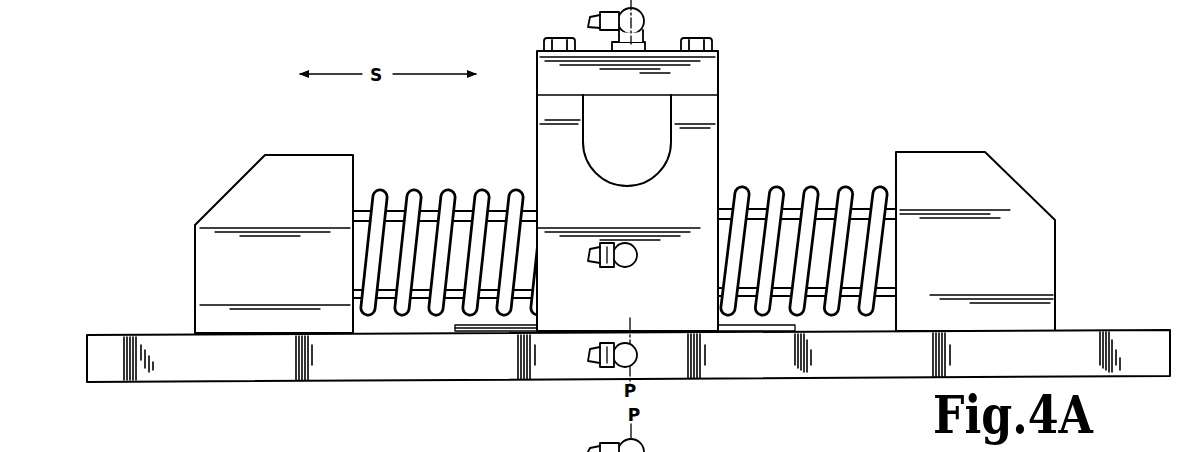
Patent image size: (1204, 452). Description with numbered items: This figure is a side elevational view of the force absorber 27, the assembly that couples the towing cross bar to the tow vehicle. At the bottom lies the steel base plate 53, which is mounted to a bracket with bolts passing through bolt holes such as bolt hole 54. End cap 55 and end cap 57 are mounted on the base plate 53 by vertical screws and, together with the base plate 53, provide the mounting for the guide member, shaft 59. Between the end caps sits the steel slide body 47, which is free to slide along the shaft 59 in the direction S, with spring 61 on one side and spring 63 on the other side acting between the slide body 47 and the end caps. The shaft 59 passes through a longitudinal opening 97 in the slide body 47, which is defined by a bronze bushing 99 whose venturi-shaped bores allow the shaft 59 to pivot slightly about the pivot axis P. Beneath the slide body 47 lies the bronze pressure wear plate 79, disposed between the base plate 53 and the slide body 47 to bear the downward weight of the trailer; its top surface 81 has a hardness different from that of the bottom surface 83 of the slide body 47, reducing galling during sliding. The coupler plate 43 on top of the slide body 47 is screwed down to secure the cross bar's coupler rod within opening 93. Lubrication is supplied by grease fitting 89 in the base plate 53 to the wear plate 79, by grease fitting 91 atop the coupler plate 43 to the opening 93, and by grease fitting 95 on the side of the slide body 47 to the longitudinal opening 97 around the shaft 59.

The force absorber 27 is at (838, 100).
The coupler plate 43 is at (712, 74).
The slide body 47 is at (722, 152).
The base plate 53 is at (506, 366).
The bolt hole 54 is at (1113, 329).
The end cap 55 is at (311, 199).
The end cap 57 is at (961, 199).
The shaft 59 is at (468, 222).
The spring 61 is at (823, 188).
The spring 63 is at (413, 188).
The pressure wear plate 79 is at (785, 325).
The top surface 81 is at (700, 318).
The bottom surface 83 is at (556, 345).
The grease fitting 89 is at (637, 353).
The grease fitting 91 is at (648, 26).
The opening 93 is at (652, 140).
The grease fitting 95 is at (637, 258).
The longitudinal opening 97 is at (723, 237).
The bushing 99 is at (720, 188).